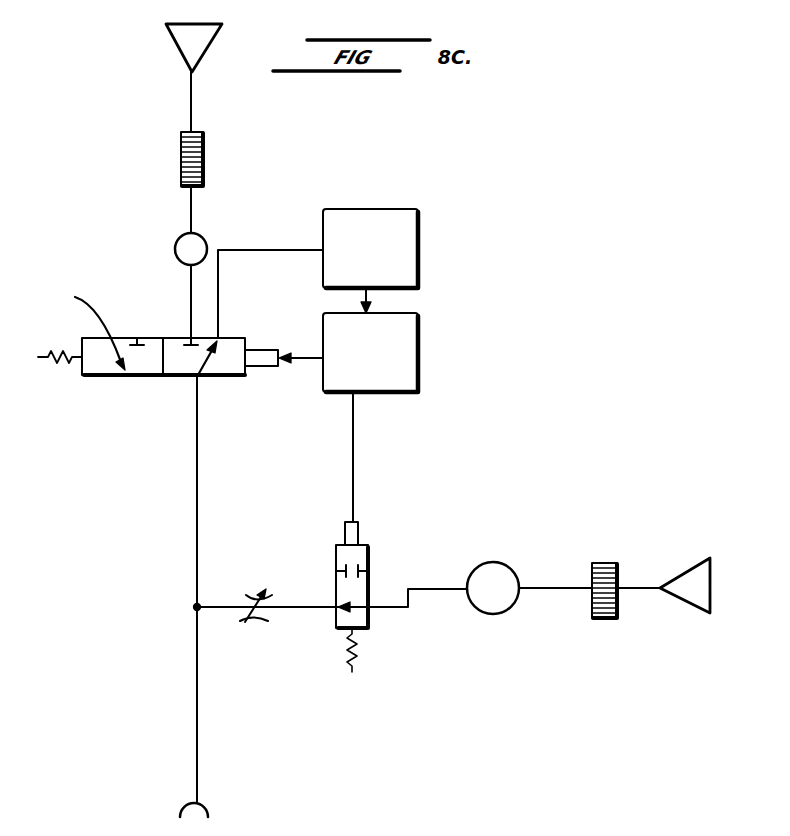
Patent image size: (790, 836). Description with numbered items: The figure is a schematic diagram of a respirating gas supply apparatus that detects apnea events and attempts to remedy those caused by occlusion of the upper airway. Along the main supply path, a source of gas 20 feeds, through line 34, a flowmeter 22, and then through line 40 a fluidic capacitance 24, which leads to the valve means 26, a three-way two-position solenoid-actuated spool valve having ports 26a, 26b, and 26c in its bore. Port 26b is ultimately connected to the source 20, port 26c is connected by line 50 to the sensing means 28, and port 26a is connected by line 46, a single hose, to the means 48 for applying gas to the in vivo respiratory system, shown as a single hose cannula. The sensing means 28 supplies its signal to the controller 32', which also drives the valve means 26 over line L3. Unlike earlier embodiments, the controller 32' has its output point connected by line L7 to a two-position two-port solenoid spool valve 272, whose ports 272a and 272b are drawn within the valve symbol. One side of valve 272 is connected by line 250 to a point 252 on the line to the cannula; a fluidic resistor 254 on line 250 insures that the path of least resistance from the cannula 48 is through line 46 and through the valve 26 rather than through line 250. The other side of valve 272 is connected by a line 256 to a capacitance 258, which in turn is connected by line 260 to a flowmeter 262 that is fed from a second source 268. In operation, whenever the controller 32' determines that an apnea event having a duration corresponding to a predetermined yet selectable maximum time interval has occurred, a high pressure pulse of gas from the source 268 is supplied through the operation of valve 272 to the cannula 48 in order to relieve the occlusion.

The source of gas 20 is at (211, 45).
The line 34 is at (192, 100).
The flowmeter 22 is at (204, 152).
The line 40 is at (192, 210).
The fluidic capacitance 24 is at (175, 246).
The line 50 is at (265, 248).
The sensing means 28 is at (362, 208).
The controller 32' is at (370, 367).
The control line L3 is at (302, 360).
The valve means 26 is at (82, 376).
The port 26a is at (127, 377).
The port 26b is at (187, 337).
The port 26c is at (137, 336).
The line 46 is at (198, 466).
The line L7 is at (354, 470).
The point 252 is at (195, 606).
The line 250 is at (281, 610).
The fluidic resistor 254 is at (263, 592).
The two-position two port solenoid spool valve 272 is at (364, 680).
The valve port 272a is at (368, 569).
The valve port 272b is at (336, 569).
The line 256 is at (437, 588).
The capacitance 258 is at (494, 615).
The line 260 is at (550, 590).
The flowmeter 262 is at (599, 619).
The source 268 is at (712, 595).
The means for applying gas to an in vivo respiratory system 48 is at (207, 809).